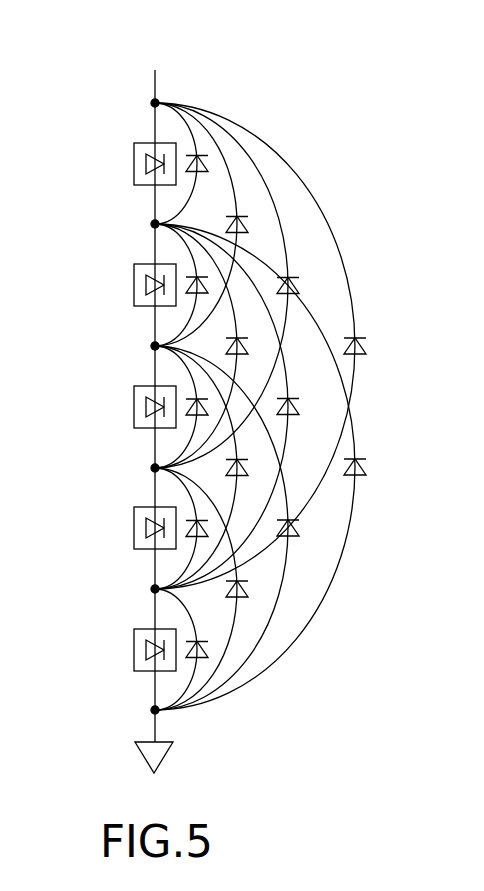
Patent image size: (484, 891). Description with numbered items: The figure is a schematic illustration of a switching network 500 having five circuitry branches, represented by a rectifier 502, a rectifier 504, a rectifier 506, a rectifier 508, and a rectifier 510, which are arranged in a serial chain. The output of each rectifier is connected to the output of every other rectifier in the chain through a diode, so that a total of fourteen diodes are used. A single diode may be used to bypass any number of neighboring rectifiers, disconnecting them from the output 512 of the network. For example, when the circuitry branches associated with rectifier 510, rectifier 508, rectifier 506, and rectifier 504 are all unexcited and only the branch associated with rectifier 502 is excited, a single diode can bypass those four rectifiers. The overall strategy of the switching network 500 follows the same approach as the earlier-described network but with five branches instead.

The switching network 500 is at (298, 62).
The rectifier 502 is at (134, 164).
The rectifier 504 is at (134, 285).
The rectifier 506 is at (134, 407).
The rectifier 508 is at (134, 528).
The rectifier 510 is at (134, 650).
The output 512 is at (127, 46).